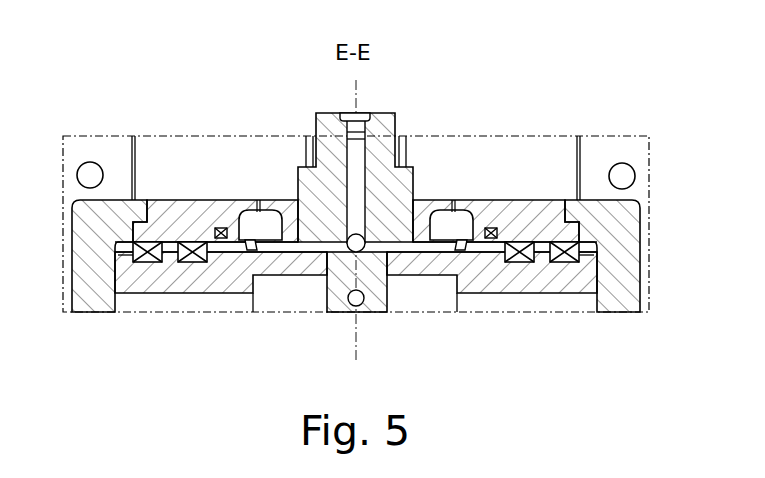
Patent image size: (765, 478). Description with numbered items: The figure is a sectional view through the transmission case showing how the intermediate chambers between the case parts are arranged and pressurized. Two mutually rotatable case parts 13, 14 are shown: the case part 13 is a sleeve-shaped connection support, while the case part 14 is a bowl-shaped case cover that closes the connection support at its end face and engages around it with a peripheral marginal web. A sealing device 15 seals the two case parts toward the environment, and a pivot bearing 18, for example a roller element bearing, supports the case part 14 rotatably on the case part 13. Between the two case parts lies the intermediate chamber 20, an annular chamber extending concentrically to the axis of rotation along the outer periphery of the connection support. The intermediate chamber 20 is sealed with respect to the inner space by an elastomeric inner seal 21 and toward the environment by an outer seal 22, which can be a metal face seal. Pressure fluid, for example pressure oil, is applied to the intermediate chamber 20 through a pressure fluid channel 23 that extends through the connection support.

The case part 13 is at (555, 287).
The case part 14 is at (632, 263).
The sealing device 15 is at (461, 204).
The pivot bearing 18 is at (517, 263).
The intermediate chamber 20 is at (247, 225).
The inner seal 21 is at (500, 232).
The outer seal 22 is at (446, 202).
The pressure fluid channel 23 is at (342, 145).